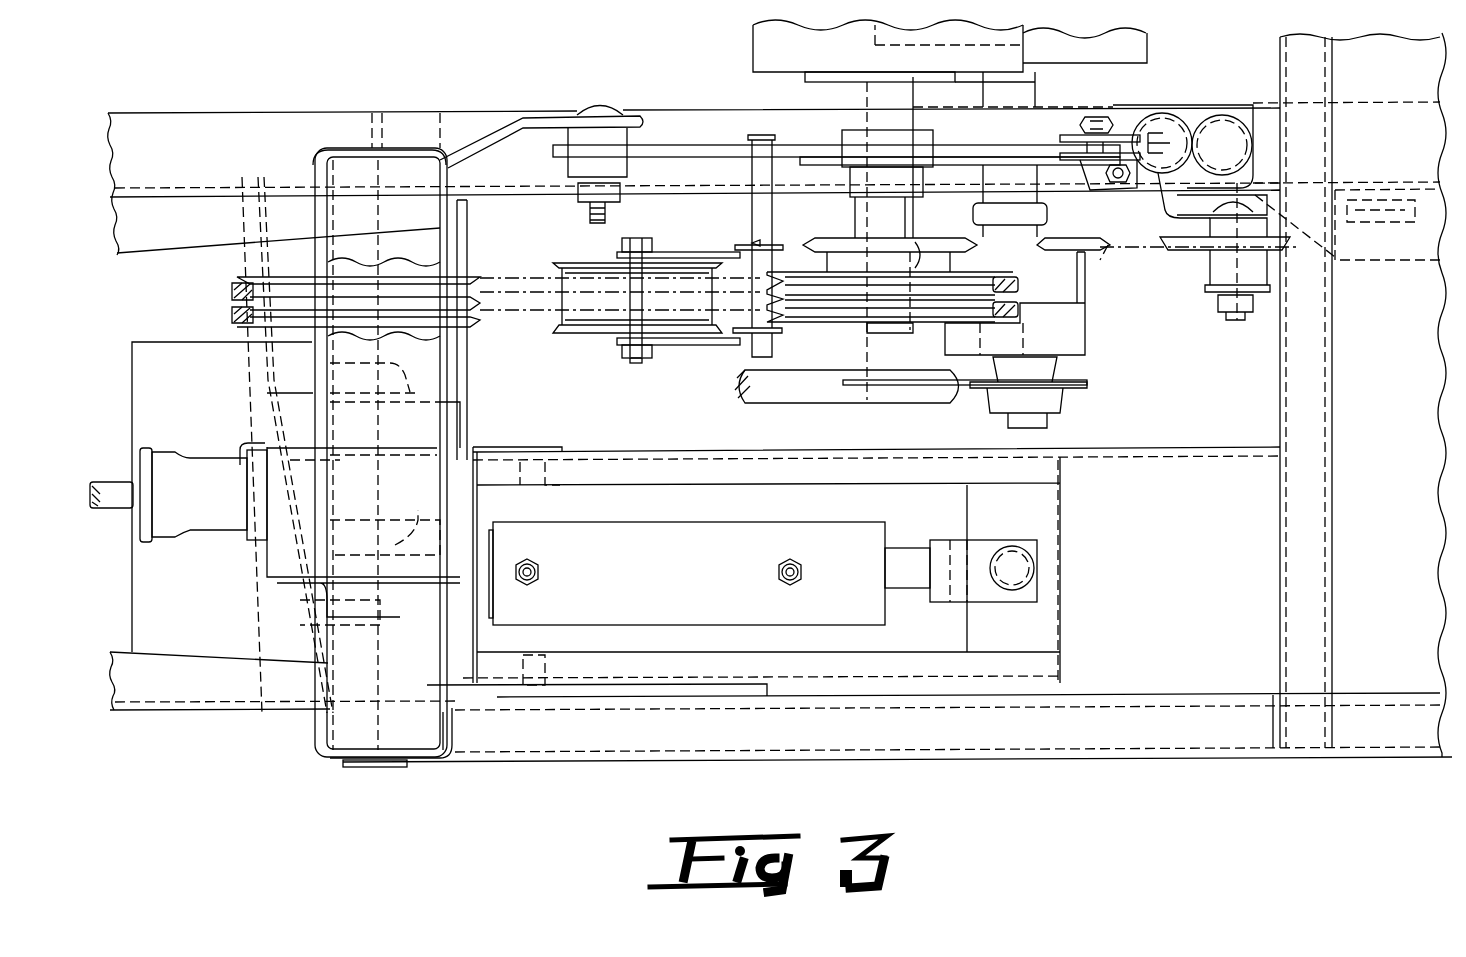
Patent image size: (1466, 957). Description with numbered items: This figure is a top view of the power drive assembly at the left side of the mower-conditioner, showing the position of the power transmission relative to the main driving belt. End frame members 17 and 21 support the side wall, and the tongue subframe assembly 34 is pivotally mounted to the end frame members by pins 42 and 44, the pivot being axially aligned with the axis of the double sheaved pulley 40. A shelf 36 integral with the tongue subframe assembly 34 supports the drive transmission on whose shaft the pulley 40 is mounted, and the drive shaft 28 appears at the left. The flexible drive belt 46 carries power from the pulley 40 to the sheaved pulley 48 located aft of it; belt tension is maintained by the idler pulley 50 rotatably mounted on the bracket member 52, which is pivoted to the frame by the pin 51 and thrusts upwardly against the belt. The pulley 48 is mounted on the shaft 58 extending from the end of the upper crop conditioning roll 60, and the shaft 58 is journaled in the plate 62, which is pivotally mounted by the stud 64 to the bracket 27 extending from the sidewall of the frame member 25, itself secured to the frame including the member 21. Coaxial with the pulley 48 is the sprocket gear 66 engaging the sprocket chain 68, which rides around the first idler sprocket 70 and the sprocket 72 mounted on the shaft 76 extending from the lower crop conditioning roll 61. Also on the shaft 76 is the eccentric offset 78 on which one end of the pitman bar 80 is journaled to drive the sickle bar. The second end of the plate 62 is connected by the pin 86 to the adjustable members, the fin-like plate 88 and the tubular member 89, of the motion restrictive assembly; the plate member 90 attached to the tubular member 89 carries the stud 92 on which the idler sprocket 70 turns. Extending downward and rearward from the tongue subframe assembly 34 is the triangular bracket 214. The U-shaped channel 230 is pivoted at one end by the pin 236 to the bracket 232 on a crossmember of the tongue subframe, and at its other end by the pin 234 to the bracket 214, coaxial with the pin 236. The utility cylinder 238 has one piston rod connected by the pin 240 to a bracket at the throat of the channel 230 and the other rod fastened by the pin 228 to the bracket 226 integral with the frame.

The end frame member 17 is at (455, 730).
The end frame member 21 is at (205, 113).
The frame member 25 is at (388, 150).
The bracket 27 is at (475, 122).
The drive shaft 28 is at (128, 510).
The tongue subframe assembly 34 is at (215, 655).
The shelf 36 is at (160, 342).
The double sheaved pulley 40 is at (470, 332).
The pin 42 is at (400, 760).
The pin 44 is at (345, 146).
The flexible drive belt 46 is at (237, 294).
The sheaved pulley 48 is at (858, 328).
The idler pulley 50 is at (606, 263).
The pin 51 is at (750, 218).
The bracket member 52 is at (725, 342).
The shaft 58 is at (866, 213).
The upper crop conditioning roll 60 is at (753, 46).
The lower crop conditioning roll 61 is at (1148, 42).
The plate 62 is at (660, 145).
The stud 64 is at (598, 221).
The sprocket gear 66 is at (920, 242).
The sprocket chain 68 is at (1108, 245).
The first idler sprocket 70 is at (1200, 252).
The sprocket 72 is at (1114, 243).
The shaft 76 is at (1040, 238).
The eccentric offset 78 is at (1022, 429).
The pitman bar 80 is at (825, 403).
The pin 86 is at (1098, 117).
The fin-like plate 88 is at (1180, 215).
The tubular member 89 is at (1190, 112).
The plate member 90 is at (1370, 226).
The stud 92 is at (1230, 320).
The triangular-shaped bracket 214 is at (671, 697).
The bracket 226 is at (392, 552).
The pin 228 is at (420, 525).
The U-shaped channel 230 is at (758, 485).
The bracket 232 is at (543, 447).
The pin 234 is at (563, 652).
The pin 236 is at (555, 487).
The utility cylinder 238 is at (607, 522).
The pin 240 is at (992, 548).